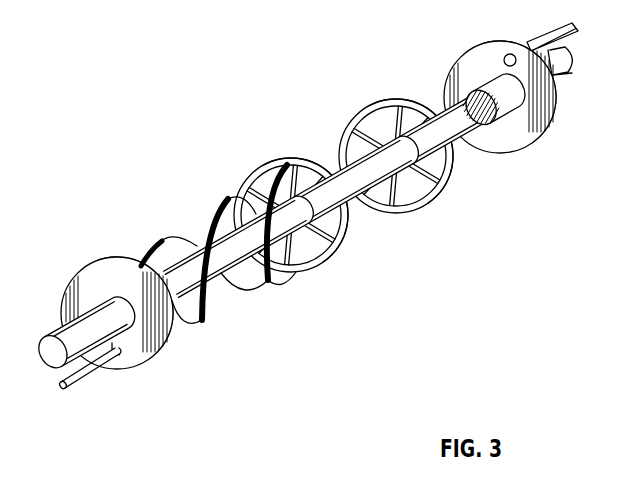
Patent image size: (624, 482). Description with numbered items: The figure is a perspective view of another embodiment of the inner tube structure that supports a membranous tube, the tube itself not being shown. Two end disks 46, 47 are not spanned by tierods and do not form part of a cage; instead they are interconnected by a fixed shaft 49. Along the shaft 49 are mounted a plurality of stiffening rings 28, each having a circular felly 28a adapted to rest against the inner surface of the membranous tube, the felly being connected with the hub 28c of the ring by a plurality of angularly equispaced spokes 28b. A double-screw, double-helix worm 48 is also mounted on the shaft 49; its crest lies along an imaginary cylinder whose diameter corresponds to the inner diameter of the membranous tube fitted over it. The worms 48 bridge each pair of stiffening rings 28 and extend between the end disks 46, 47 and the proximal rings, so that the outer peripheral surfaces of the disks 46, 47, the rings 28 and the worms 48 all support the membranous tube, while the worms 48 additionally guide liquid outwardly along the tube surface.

The stiffening ring 28 is at (357, 171).
The circular felly 28a is at (396, 101).
The spoke 28b is at (353, 131).
The hub 28c is at (403, 195).
The end disk 46 is at (140, 356).
The end disk 47 is at (513, 152).
The double-screw worm 48 is at (206, 312).
The fixed shaft 49 is at (460, 146).